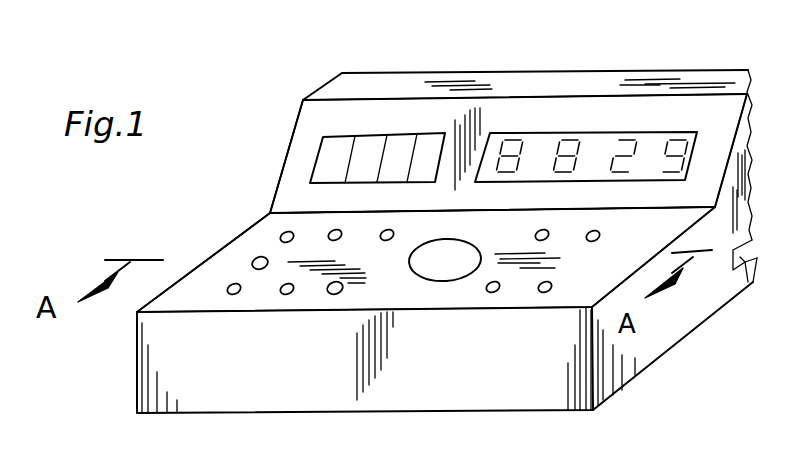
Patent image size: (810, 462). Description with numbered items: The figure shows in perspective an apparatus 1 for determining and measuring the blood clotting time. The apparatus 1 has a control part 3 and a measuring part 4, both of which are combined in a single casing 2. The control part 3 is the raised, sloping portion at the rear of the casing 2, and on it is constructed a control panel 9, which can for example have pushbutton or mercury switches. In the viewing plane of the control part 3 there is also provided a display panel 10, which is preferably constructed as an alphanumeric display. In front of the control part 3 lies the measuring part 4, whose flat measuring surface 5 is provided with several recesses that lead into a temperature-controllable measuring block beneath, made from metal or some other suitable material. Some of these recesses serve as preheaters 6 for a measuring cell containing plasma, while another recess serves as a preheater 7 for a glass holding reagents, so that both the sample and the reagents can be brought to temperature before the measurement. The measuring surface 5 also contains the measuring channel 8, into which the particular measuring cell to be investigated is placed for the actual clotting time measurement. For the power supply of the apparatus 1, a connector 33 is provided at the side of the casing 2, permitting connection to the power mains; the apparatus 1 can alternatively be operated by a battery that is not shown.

The apparatus 1 is at (247, 78).
The casing 2 is at (242, 199).
The control part 3 is at (291, 141).
The measuring part 4 is at (212, 257).
The measuring surface 5 is at (551, 297).
The preheaters for measuring cell 6 is at (229, 294).
The preheaters for glass with reagents 7 is at (445, 268).
The measuring channel 8 is at (262, 271).
The control panel 9 is at (365, 145).
The display panel 10 is at (543, 145).
The connector 33 is at (750, 284).